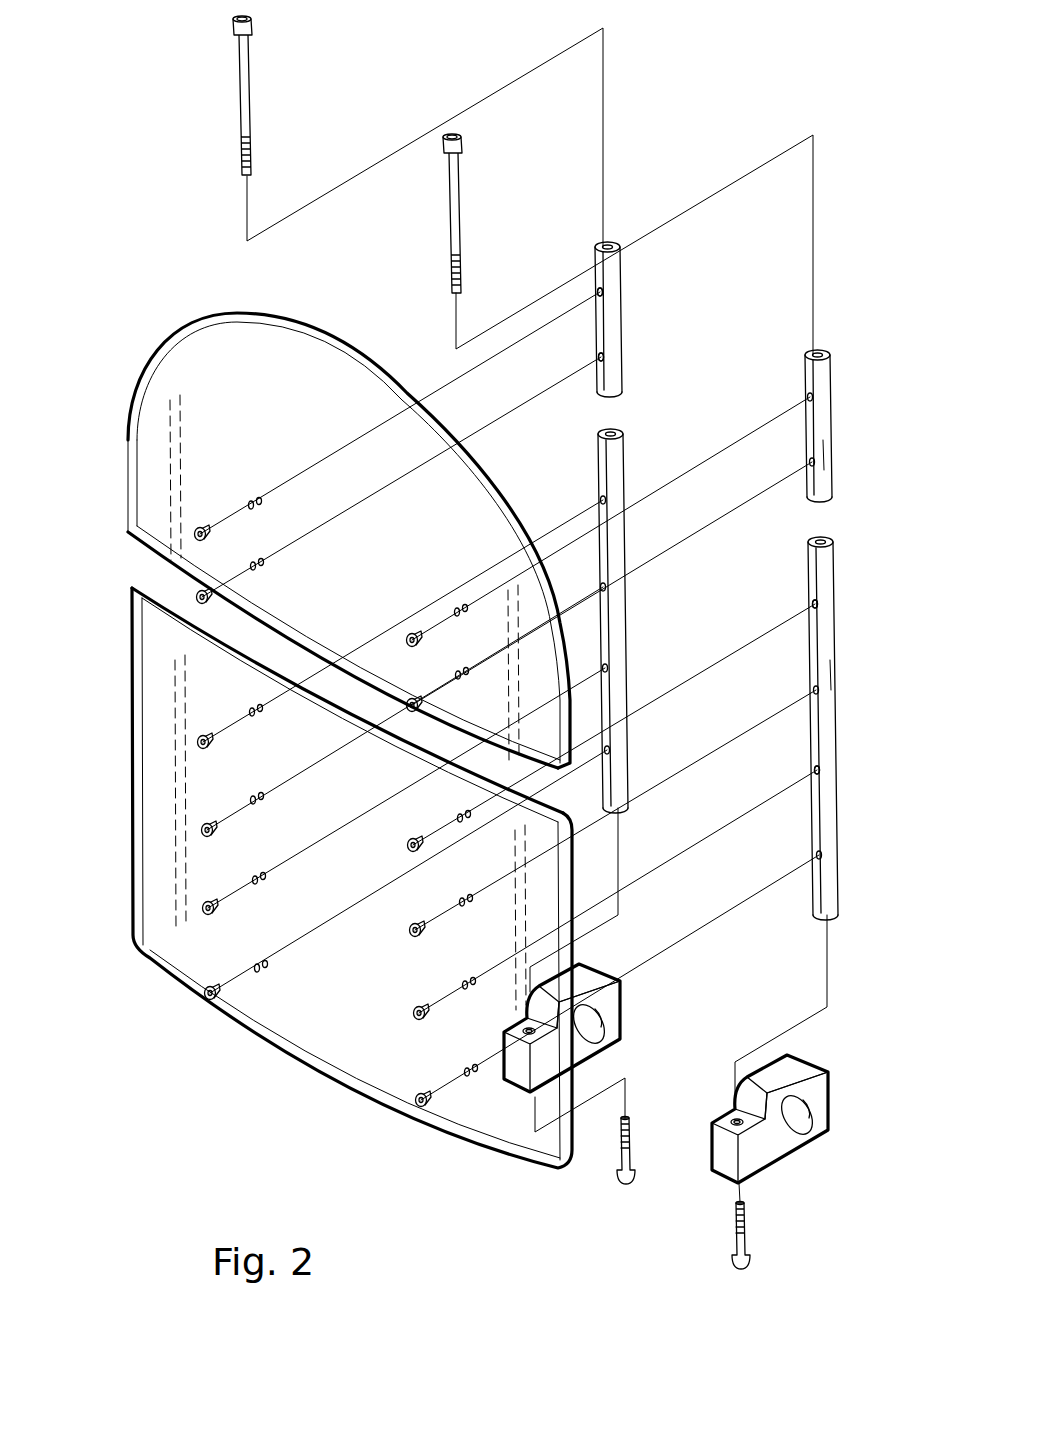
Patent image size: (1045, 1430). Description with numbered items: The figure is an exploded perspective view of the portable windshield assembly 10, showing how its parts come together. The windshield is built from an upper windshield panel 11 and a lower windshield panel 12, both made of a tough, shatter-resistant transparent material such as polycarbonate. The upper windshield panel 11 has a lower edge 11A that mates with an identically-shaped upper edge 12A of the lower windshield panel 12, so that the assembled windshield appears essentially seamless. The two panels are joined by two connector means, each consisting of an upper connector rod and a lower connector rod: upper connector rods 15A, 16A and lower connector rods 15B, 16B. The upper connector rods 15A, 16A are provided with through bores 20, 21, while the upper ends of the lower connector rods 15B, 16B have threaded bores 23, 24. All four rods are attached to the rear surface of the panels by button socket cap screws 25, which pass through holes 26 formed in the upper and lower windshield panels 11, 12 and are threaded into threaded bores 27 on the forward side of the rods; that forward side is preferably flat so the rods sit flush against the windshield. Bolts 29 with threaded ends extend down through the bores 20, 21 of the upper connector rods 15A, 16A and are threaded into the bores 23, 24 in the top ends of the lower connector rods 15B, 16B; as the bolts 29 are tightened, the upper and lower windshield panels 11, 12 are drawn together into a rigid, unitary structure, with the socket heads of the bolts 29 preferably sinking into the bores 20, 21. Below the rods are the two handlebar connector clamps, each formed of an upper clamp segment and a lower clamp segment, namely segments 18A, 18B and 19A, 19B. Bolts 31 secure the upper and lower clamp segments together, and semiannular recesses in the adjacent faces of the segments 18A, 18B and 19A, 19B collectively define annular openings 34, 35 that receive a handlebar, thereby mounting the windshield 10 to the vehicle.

The portable windshield assembly 10 is at (150, 240).
The upper windshield panel 11 is at (247, 345).
The lower edge 11A is at (132, 538).
The lower windshield panel 12 is at (297, 1023).
The upper edge 12A is at (132, 585).
The upper connector rod 15A is at (598, 345).
The lower connector rod 15B is at (613, 533).
The upper connector rod 16A is at (823, 440).
The lower connector rod 16B is at (830, 660).
The upper clamp segment 18A is at (615, 995).
The lower clamp segment 18B is at (600, 1040).
The upper clamp segment 19A is at (810, 1078).
The lower clamp segment 19B is at (800, 1137).
The through bore 20 is at (595, 247).
The through bore 21 is at (820, 352).
The threaded bore 23 is at (620, 437).
The threaded bore 24 is at (823, 542).
The button socket cap screws 25 is at (202, 597).
The holes 26 is at (250, 567).
The threaded bores 27 is at (600, 292).
The bolts 29 is at (447, 134).
The bolts 31 is at (633, 1162).
The annular opening 34 is at (595, 1018).
The annular opening 35 is at (805, 1108).